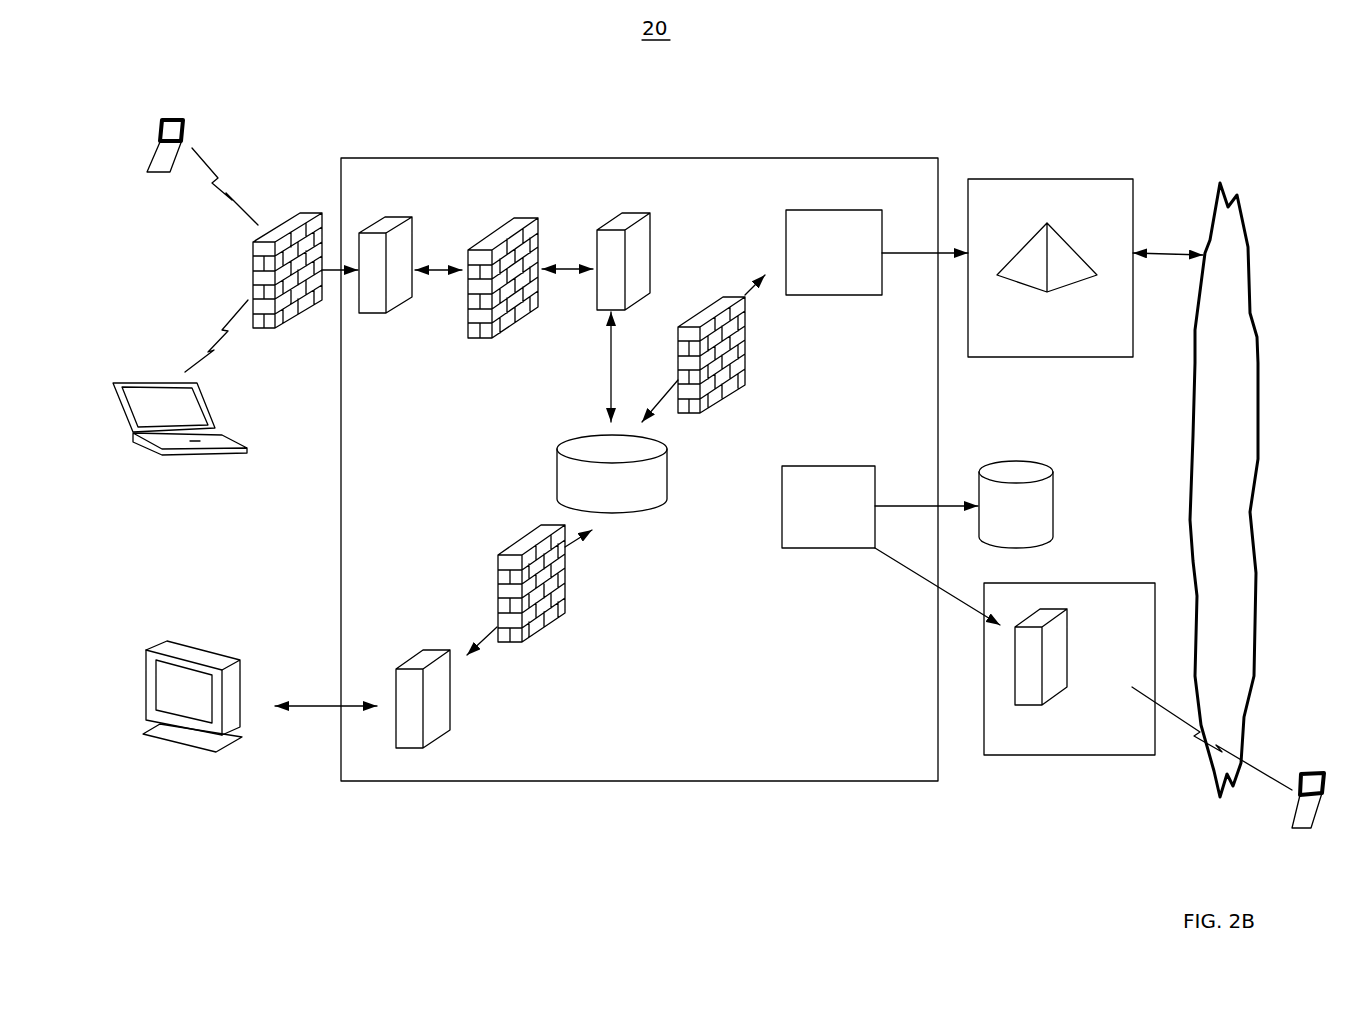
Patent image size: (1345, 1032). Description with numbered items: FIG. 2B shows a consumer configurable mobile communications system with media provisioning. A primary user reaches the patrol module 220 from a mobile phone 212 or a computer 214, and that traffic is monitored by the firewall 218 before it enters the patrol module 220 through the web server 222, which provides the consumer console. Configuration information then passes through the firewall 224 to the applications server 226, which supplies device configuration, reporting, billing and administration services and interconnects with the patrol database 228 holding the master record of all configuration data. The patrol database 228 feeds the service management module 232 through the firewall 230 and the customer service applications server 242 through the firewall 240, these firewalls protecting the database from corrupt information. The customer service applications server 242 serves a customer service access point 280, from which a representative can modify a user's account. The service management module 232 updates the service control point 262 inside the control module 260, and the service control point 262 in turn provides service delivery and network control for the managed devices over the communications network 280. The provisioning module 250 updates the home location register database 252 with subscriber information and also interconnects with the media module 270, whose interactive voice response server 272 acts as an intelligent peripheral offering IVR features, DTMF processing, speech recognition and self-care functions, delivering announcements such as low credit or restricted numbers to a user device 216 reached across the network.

The mobile phone 212 is at (183, 120).
The computer 214 is at (205, 402).
The mobile phone 216 is at (1290, 809).
The firewall 218 is at (252, 278).
The patrol module 220 is at (753, 158).
The web server 222 is at (413, 223).
The firewall 224 is at (537, 223).
The applications server 226 is at (652, 228).
The patrol database 228 is at (556, 473).
The firewall 230 is at (743, 352).
The service management module 232 is at (818, 210).
The firewall 240 is at (498, 567).
The customer service applications server 242 is at (448, 685).
The provisioning module 250 is at (818, 466).
The home location register database 252 is at (1055, 488).
The control module 260 is at (1073, 179).
The service control point 262 is at (1050, 292).
The media module 270 is at (1072, 583).
The interactive voice response server 272 is at (1070, 647).
The customer service access point 280 is at (240, 688).